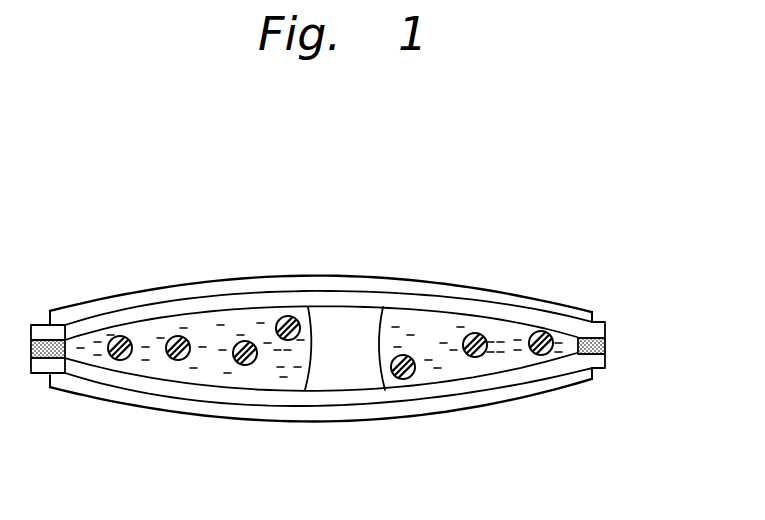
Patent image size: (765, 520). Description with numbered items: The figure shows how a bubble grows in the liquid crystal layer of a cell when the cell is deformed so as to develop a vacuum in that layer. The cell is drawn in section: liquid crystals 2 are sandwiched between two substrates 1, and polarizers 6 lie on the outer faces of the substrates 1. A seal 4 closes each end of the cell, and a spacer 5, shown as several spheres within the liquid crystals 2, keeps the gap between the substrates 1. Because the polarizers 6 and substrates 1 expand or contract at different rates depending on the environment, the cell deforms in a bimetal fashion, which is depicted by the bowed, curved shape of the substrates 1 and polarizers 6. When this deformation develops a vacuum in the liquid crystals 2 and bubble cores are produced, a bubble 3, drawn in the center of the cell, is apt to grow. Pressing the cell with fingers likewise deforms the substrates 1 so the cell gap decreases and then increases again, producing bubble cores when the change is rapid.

The substrates 1 is at (606, 322).
The liquid crystals 2 is at (520, 333).
The bubble 3 is at (351, 330).
The seal 4 is at (607, 344).
The spacer 5 is at (473, 333).
The polarizers 6 is at (512, 293).